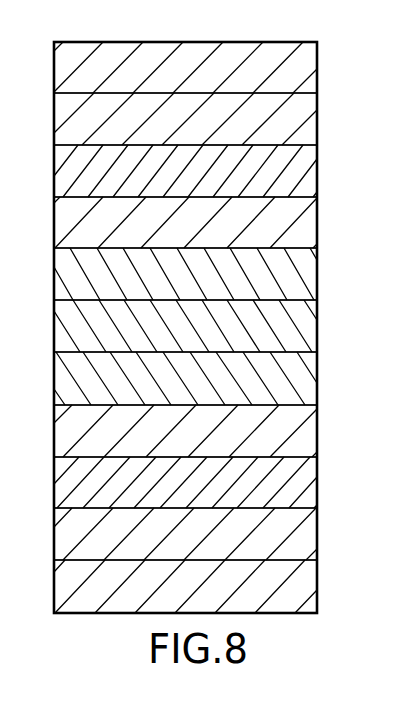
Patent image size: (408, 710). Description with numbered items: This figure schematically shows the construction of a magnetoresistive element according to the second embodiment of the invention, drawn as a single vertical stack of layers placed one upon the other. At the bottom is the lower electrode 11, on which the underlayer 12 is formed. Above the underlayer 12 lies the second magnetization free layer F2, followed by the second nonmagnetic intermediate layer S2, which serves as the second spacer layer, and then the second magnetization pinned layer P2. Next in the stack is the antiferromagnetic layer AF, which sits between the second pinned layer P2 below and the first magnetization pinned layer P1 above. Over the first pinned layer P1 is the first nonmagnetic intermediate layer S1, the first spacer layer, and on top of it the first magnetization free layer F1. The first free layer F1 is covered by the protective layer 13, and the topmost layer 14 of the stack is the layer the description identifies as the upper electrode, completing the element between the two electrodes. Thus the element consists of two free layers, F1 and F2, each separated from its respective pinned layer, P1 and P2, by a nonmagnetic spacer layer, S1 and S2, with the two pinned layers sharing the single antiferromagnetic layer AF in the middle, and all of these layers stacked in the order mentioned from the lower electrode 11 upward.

The upper electrode layer 14 is at (317, 70).
The protective layer 13 is at (317, 123).
The first magnetization free layer F1 is at (317, 173).
The first nonmagnetic intermediate layer S1 is at (317, 225).
The first magnetization pinned layer P1 is at (317, 277).
The antiferromagnetic layer AF is at (317, 329).
The second magnetization pinned layer P2 is at (317, 381).
The second nonmagnetic intermediate layer S2 is at (317, 433).
The second magnetization free layer F2 is at (317, 485).
The underlayer 12 is at (317, 538).
The lower electrode 11 is at (317, 590).